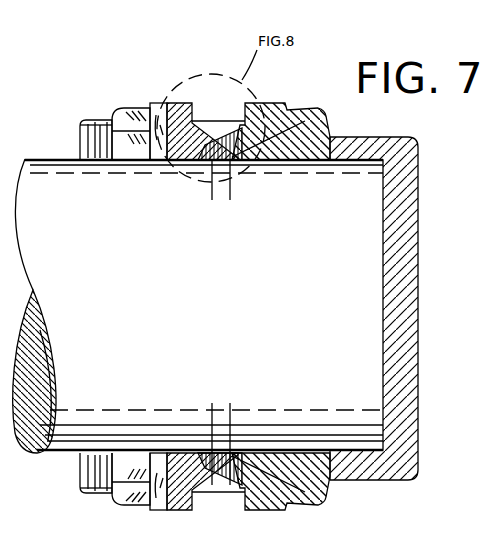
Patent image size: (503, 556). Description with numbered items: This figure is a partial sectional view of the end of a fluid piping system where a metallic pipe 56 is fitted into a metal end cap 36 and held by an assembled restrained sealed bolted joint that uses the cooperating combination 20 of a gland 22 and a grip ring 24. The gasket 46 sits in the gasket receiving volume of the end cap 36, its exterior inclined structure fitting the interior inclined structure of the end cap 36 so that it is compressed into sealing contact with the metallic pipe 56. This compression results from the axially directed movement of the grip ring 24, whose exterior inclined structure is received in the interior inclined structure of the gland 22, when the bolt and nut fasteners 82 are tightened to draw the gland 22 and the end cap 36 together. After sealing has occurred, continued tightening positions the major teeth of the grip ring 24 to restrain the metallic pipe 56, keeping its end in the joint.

The cooperating combination 20 is at (140, 509).
The gland 22 is at (176, 100).
The grip ring 24 is at (212, 480).
The end cap 36 is at (423, 205).
The gasket 46 is at (284, 128).
The metallic pipe 56 is at (43, 157).
The bolt and nut fasteners 82 is at (124, 105).